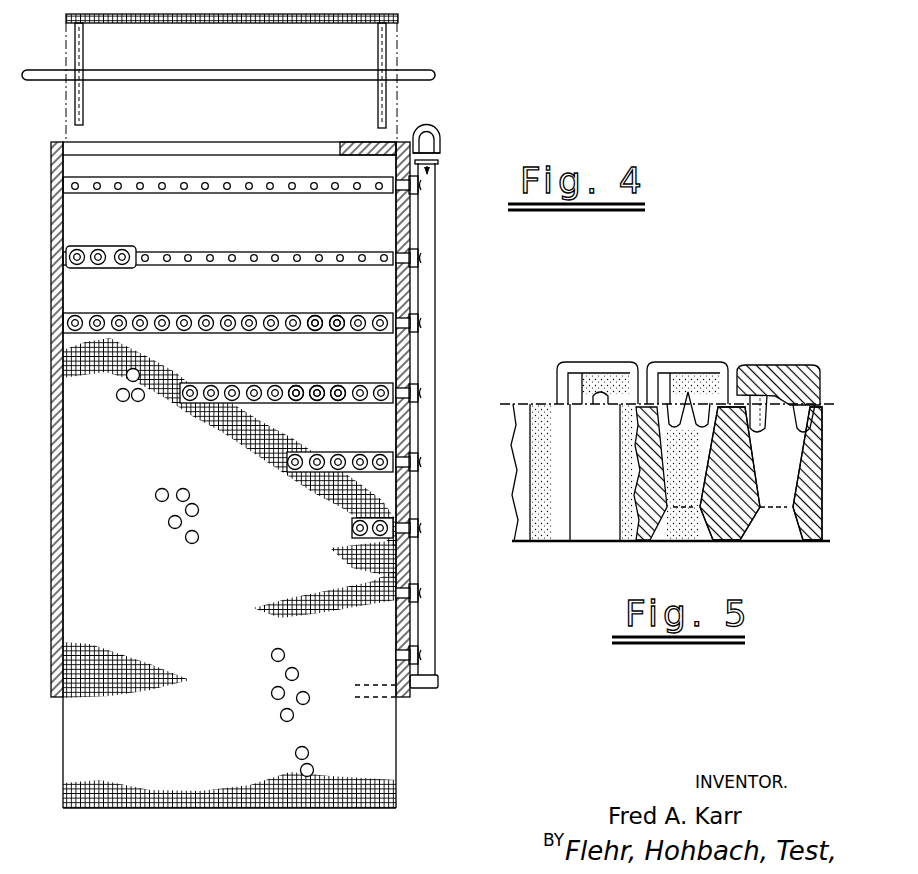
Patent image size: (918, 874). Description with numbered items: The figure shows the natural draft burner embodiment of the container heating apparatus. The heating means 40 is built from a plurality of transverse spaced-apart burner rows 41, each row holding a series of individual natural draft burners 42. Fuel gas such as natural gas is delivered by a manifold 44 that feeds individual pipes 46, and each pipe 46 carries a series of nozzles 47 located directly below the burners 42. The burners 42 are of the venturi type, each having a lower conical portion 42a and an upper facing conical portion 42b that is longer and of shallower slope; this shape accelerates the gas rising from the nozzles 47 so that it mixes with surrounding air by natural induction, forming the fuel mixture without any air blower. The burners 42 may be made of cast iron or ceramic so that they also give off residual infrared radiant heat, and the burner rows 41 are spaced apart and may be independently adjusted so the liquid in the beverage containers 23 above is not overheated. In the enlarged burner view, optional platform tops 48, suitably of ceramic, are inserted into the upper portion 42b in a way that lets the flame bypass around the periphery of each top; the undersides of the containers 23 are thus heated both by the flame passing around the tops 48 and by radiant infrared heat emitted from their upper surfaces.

In FIG. 4, the beverage containers 23 is at (183, 490).
In FIG. 4, the heating means 40 is at (359, 172).
In FIG. 4, the burner rows 41 is at (130, 273).
In FIG. 4, the natural draft burners 42 is at (337, 336).
In FIG. 5, the natural draft burners 42 is at (690, 535).
In FIG. 5, the lower conical portion 42a is at (707, 543).
In FIG. 5, the upper facing conical portion 42b is at (663, 475).
In FIG. 4, the manifold 44 is at (431, 288).
In FIG. 4, the individual pipes 46 is at (350, 256).
In FIG. 4, the nozzles 47 is at (292, 190).
In FIG. 5, the platform tops 48 is at (765, 370).